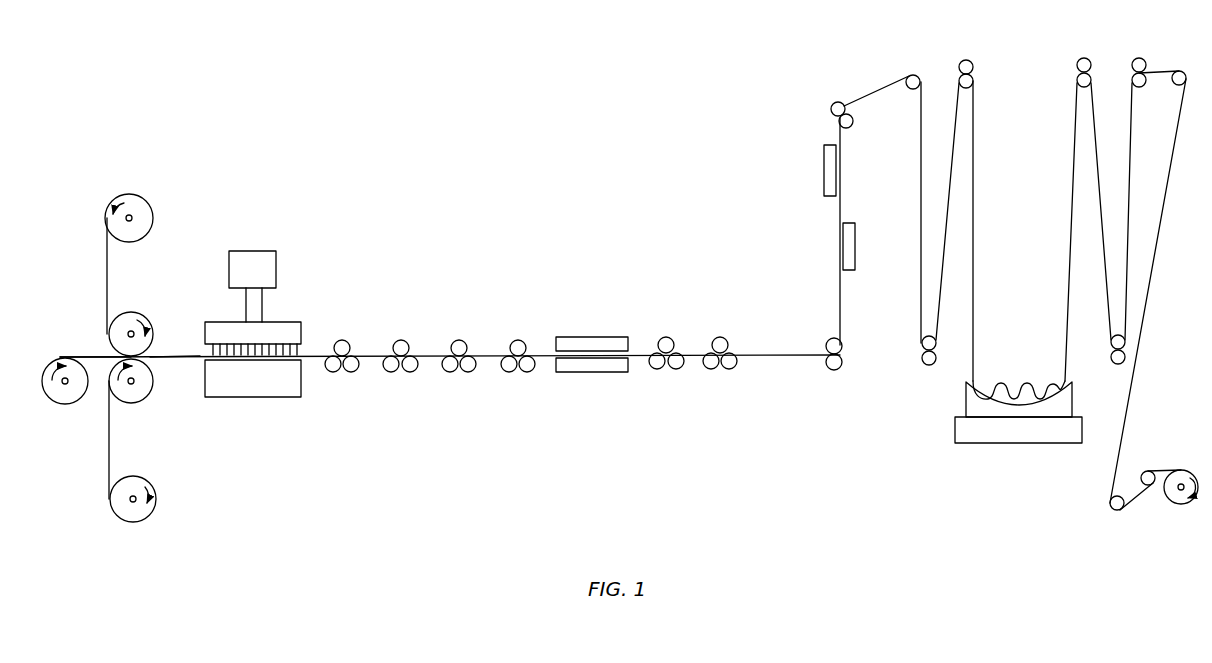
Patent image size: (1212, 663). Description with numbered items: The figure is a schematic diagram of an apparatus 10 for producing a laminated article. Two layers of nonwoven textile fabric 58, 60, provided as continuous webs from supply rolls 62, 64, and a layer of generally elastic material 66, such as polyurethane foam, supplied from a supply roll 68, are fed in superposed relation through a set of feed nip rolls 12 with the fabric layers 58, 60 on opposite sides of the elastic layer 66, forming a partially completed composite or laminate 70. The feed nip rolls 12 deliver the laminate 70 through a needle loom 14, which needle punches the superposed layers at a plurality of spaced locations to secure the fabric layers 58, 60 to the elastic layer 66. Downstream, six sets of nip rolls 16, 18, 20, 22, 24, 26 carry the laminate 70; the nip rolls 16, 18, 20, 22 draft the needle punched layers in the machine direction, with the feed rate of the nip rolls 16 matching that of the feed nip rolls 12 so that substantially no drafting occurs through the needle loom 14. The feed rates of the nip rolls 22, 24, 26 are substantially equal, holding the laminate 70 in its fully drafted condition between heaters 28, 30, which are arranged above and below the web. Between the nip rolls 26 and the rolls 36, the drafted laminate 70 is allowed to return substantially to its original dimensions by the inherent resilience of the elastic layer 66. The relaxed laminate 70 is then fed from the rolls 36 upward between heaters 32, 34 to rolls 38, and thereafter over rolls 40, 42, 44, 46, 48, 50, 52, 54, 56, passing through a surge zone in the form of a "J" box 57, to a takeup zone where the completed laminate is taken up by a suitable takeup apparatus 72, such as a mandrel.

The apparatus 10 is at (448, 280).
The feed nip rolls 12 is at (134, 313).
The needle loom 14 is at (276, 266).
The nip rolls 16 is at (342, 339).
The nip rolls 18 is at (401, 339).
The nip rolls 20 is at (459, 339).
The nip rolls 22 is at (518, 339).
The nip rolls 24 is at (668, 337).
The nip rolls 26 is at (724, 337).
The heater 28 is at (586, 336).
The heater 30 is at (590, 373).
The heater 32 is at (823, 170).
The heater 34 is at (856, 248).
The rolls 36 is at (827, 341).
The rolls 38 is at (849, 128).
The rolls 40 is at (910, 90).
The rolls 42 is at (924, 339).
The rolls 44 is at (973, 86).
The rolls 46 is at (1090, 88).
The rolls 48 is at (1112, 338).
The rolls 50 is at (1139, 88).
The rolls 52 is at (1177, 86).
The rolls 54 is at (1126, 492).
The rolls 56 is at (1128, 512).
The "J" box 57 is at (966, 400).
The nonwoven textile fabric layer 58 is at (107, 272).
The nonwoven textile fabric layer 60 is at (109, 440).
The supply roll 62 is at (150, 204).
The supply roll 64 is at (150, 481).
The generally elastic material layer 66 is at (88, 356).
The supply roll 68 is at (62, 404).
The laminate 70 is at (174, 359).
The takeup apparatus 72 is at (1183, 505).